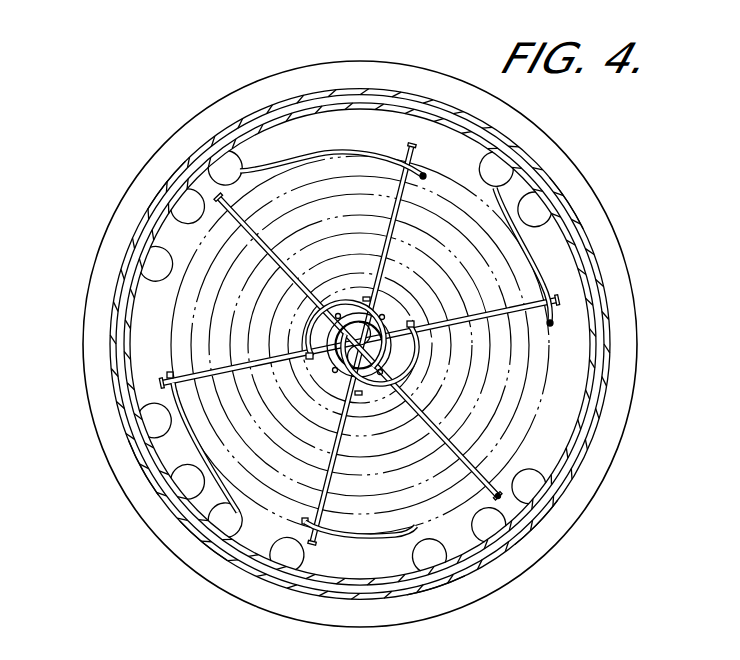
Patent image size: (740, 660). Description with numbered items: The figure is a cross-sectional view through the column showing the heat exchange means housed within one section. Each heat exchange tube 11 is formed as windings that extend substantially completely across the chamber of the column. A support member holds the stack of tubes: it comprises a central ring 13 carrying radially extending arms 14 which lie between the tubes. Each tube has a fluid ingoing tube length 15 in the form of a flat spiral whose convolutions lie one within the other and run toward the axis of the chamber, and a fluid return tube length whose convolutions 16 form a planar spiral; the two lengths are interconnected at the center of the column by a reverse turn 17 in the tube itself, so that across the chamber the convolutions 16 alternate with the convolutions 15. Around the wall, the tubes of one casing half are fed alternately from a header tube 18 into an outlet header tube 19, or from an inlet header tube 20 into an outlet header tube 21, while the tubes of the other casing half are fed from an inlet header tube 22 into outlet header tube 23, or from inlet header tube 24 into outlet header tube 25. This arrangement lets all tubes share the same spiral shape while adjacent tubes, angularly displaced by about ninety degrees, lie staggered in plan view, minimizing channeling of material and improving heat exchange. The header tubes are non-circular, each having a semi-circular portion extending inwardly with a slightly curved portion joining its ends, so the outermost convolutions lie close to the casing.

The heat exchange tube 11 is at (402, 163).
The central ring 13 is at (392, 321).
The radially extending arm 14 is at (421, 170).
The fluid ingoing tube length 15 is at (336, 158).
The convolutions of fluid return tube length 16 is at (335, 537).
The reverse turn 17 is at (420, 361).
The header tube 18 is at (214, 168).
The outlet header tube 19 is at (435, 578).
The inlet header tube 20 is at (506, 166).
The outlet header tube 21 is at (203, 537).
The inlet header tube 22 is at (533, 515).
The outlet header tube 23 is at (168, 190).
The inlet header tube 24 is at (554, 214).
The outlet header tube 25 is at (158, 457).